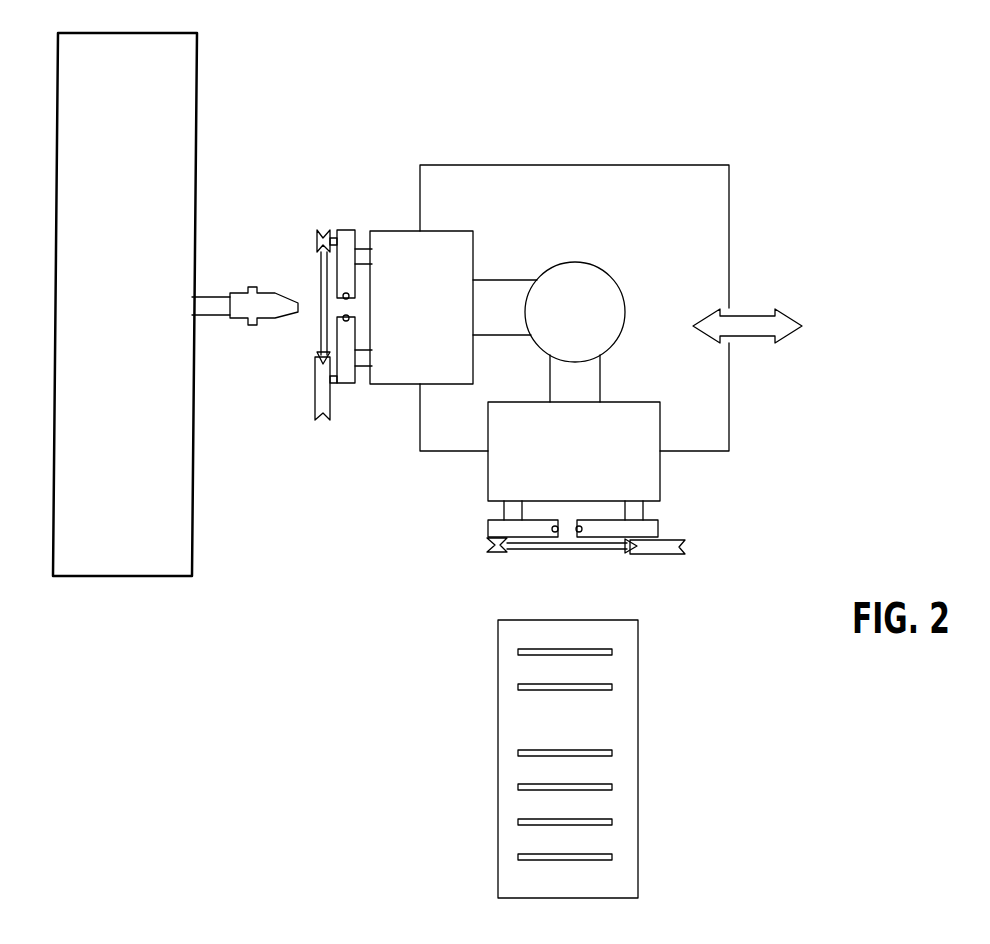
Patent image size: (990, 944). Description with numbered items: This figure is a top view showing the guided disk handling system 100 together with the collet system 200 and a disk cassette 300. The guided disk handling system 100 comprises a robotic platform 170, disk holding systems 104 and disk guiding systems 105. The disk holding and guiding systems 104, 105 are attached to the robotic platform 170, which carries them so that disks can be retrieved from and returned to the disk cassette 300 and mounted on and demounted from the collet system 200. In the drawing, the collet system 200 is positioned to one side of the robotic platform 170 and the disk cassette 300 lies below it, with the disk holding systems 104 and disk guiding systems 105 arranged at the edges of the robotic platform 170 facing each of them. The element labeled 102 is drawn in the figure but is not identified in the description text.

The apparatus 100 is at (812, 266).
The tape 102 is at (318, 270).
The guide block 104 is at (342, 230).
The sensor 105 is at (343, 303).
The housing 170 is at (600, 178).
The nozzle 200 is at (242, 293).
The tray 300 is at (638, 714).